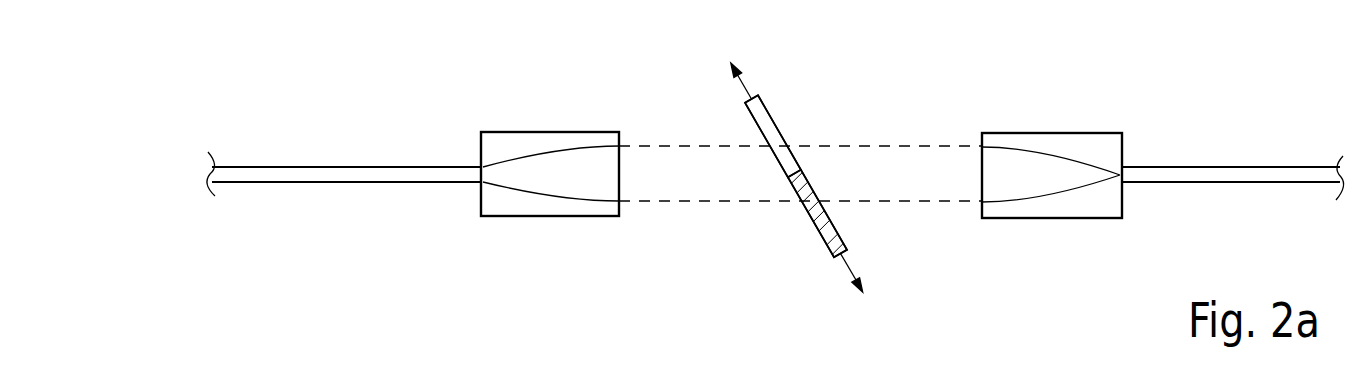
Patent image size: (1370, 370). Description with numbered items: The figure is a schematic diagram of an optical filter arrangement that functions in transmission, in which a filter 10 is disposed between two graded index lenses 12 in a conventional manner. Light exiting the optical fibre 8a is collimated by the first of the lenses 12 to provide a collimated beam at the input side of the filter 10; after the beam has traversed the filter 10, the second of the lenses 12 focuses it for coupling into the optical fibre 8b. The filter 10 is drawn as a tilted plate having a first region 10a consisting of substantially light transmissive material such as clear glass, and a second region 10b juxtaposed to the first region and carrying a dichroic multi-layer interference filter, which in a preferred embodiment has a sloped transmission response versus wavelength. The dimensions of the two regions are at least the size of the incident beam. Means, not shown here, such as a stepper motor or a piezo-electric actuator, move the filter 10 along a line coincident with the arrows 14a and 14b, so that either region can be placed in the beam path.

The optical fibre 8a is at (344, 137).
The optical fibre 8b is at (1233, 143).
The graded index (GRIN) lenses 12 is at (787, 137).
The filter 10 is at (771, 175).
The first region 10a is at (720, 125).
The second region 10b is at (783, 229).
The arrow 14a is at (781, 72).
The arrow 14b is at (897, 263).